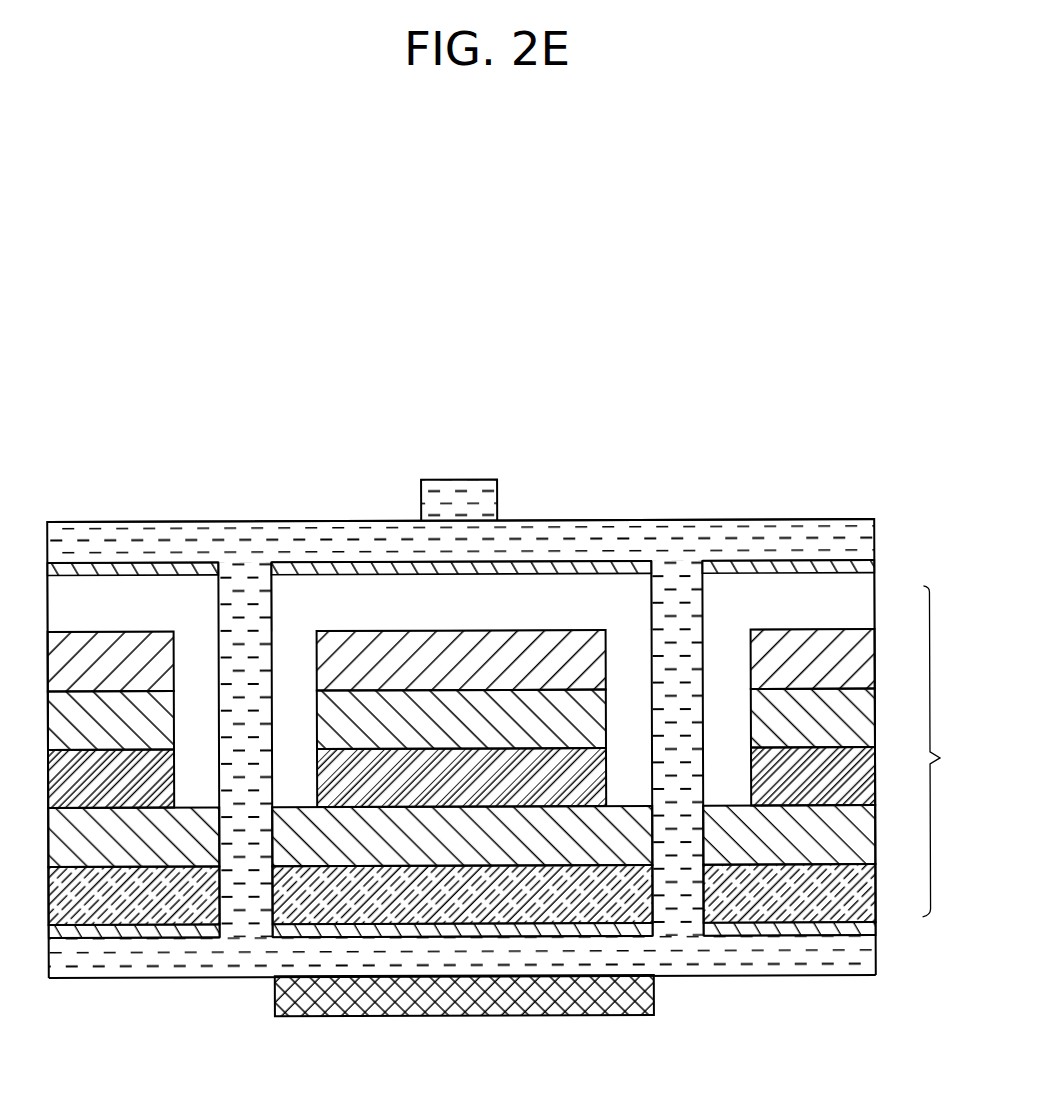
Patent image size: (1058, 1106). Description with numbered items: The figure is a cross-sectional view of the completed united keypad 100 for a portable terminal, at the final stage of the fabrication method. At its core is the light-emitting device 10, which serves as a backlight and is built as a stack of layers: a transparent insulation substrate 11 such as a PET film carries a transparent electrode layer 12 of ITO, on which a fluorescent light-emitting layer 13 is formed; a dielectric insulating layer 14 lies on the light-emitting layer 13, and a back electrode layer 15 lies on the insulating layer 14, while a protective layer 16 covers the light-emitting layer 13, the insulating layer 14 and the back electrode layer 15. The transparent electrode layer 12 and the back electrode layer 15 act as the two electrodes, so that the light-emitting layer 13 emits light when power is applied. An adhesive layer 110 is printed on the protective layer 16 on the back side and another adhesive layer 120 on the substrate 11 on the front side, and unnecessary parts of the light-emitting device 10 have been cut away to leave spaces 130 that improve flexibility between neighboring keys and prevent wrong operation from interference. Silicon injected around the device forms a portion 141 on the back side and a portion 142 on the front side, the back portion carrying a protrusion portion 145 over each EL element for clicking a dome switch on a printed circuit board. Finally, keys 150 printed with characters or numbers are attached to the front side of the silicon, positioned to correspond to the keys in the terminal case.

The united keypad 100 is at (798, 451).
The light-emitting device 10 is at (944, 751).
The transparent insulation substrate 11 is at (870, 896).
The transparent electrode layer 12 is at (870, 831).
The light-emitting layer 13 is at (870, 775).
The insulating layer 14 is at (870, 725).
The back electrode layer 15 is at (870, 655).
The protective layer 16 is at (870, 600).
The adhesive layer 110 is at (870, 571).
The adhesive layer 120 is at (870, 933).
The space 130 is at (703, 600).
The portion of the silicon layer 141 is at (870, 533).
The portion of the silicon layer 142 is at (870, 961).
The protrusion portion 145 is at (470, 490).
The key 150 is at (473, 1014).